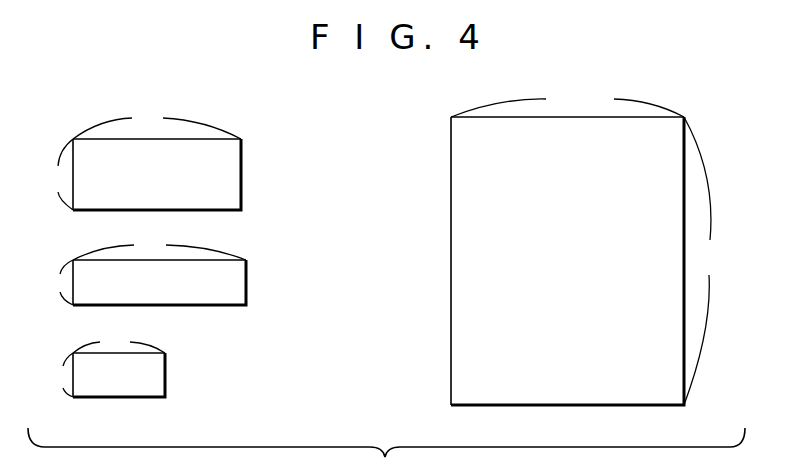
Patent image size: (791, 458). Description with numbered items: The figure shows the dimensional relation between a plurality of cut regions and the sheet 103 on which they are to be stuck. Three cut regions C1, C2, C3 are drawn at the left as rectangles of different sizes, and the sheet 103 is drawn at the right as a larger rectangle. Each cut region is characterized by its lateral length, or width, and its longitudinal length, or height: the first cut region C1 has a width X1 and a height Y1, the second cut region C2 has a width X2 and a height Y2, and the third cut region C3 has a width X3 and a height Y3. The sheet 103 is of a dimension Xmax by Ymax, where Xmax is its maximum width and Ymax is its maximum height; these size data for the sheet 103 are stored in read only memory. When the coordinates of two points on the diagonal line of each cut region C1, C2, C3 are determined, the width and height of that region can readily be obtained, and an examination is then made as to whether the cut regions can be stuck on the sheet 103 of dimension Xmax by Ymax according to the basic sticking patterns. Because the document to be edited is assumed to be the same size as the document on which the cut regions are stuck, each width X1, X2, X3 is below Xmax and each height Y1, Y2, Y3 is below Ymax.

The cut region C1 is at (241, 186).
The width of cut region X1 is at (157, 122).
The height of cut region Y1 is at (59, 174).
The cut region C2 is at (246, 285).
The width of cut region X2 is at (159, 246).
The height of cut region Y2 is at (58, 282).
The cut region C3 is at (165, 378).
The width of cut region X3 is at (119, 342).
The height of cut region Y3 is at (57, 375).
The sheet 103 is at (632, 405).
The maximum width of sheet Xmax is at (567, 103).
The maximum height of sheet Ymax is at (720, 261).